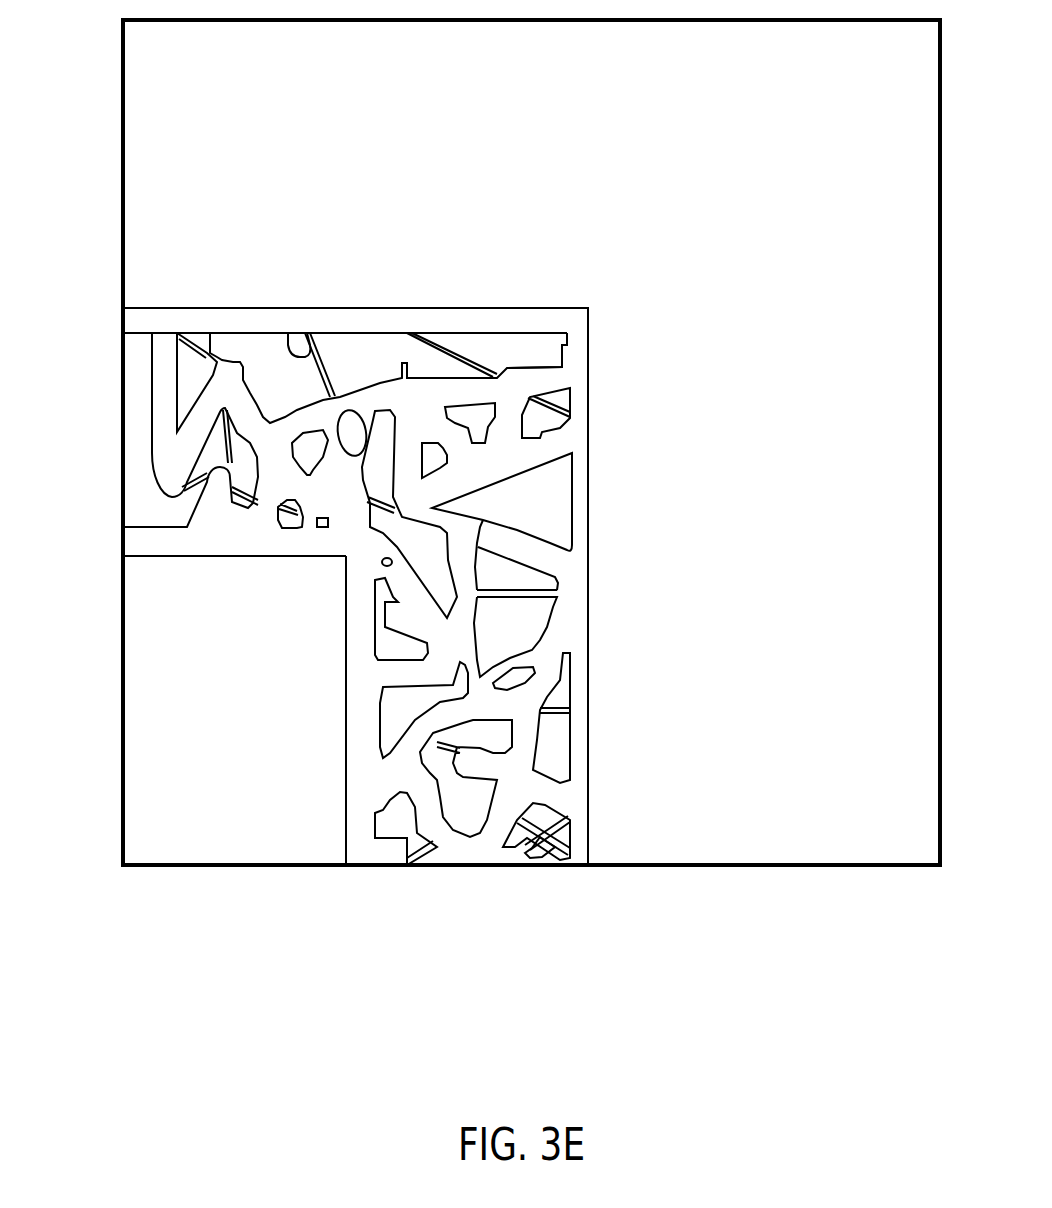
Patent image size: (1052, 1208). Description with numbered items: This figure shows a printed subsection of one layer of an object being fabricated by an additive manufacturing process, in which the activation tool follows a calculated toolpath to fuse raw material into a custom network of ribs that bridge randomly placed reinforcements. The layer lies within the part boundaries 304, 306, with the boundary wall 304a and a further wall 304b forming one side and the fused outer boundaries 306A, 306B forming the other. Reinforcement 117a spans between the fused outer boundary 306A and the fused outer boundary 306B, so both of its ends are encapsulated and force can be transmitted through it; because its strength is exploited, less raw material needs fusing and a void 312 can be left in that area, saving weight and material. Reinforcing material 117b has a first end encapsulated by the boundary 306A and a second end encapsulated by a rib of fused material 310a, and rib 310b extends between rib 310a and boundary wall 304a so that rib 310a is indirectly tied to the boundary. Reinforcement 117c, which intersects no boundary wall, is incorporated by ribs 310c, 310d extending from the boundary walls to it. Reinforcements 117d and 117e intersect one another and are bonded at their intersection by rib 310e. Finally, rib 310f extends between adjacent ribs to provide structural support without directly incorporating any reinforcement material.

The part boundary 304 is at (344, 783).
The boundary wall 304a is at (163, 557).
The sheet edge portion 304b is at (344, 710).
The part boundary 306 is at (588, 750).
The fused outer boundary 306A is at (355, 308).
The fused outer boundary 306B is at (582, 485).
The void 312 is at (537, 343).
The reinforcement 117a is at (467, 357).
The reinforcing material 117b is at (288, 333).
The reinforcement 117c is at (222, 444).
The reinforcement 117d is at (565, 822).
The reinforcement 117e is at (558, 858).
The rib of fused material 310a is at (430, 378).
The rib 310b is at (307, 475).
The rib 310c is at (390, 777).
The rib 310d is at (473, 777).
The rib 310e is at (527, 838).
The rib 310f is at (437, 450).